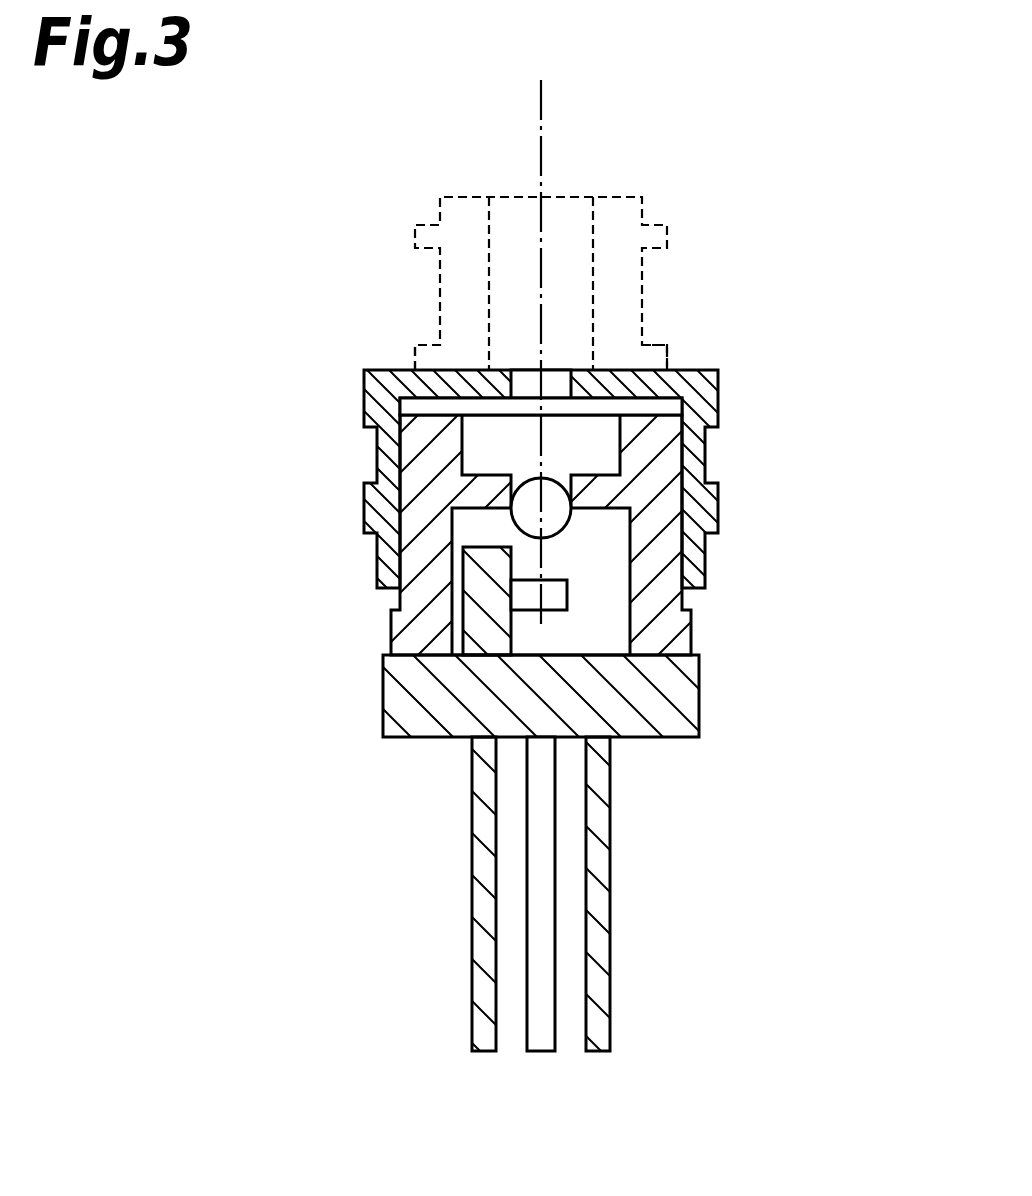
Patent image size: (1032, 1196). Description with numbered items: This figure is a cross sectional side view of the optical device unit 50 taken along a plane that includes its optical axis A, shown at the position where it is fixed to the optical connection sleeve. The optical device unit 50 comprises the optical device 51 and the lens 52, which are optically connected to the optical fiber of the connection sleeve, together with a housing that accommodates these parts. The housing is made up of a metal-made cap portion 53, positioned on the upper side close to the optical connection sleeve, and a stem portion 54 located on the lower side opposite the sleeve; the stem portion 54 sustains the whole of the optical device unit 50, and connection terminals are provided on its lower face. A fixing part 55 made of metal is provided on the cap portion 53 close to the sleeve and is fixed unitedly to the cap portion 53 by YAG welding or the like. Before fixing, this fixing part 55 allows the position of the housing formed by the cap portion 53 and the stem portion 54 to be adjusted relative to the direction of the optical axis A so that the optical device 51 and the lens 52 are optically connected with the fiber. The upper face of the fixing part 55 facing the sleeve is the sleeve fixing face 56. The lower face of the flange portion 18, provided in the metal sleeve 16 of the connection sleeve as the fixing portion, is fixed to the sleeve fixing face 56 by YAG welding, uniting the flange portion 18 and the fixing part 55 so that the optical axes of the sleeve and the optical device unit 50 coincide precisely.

The optical axis A is at (543, 153).
The metal sleeve 16 is at (645, 207).
The flange portion 18 is at (665, 357).
The optical device unit 50 is at (566, 667).
The optical device 51 is at (555, 593).
The lens 52 is at (563, 522).
The cap portion 53 is at (391, 628).
The stem portion 54 is at (390, 702).
The fixing part 55 is at (367, 404).
The sleeve fixing face 56 is at (383, 370).